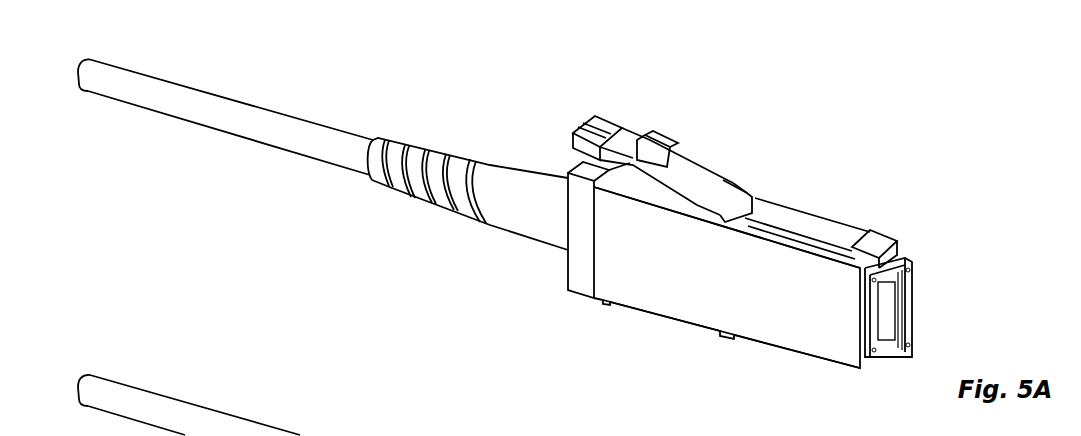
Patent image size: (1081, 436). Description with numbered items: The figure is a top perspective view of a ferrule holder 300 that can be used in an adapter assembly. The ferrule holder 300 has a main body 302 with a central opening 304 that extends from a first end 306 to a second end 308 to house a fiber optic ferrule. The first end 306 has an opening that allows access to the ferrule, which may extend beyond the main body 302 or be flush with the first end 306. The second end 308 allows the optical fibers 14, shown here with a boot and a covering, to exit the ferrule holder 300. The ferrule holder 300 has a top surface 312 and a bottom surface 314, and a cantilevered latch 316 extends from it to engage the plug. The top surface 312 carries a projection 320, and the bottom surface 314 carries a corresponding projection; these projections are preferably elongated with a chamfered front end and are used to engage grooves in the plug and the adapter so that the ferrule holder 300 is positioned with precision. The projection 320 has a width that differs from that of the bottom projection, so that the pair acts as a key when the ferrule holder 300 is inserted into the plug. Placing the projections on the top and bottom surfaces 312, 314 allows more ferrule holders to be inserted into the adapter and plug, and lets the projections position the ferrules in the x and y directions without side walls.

The optical fibers 14 is at (228, 135).
The ferrule holder 300 is at (812, 157).
The main body 302 is at (643, 295).
The central opening 304 is at (880, 364).
The first end 306 is at (894, 248).
The second end 308 is at (588, 297).
The top surface 312 is at (886, 235).
The bottom surface 314 is at (687, 427).
The cantilevered latch 316 is at (673, 167).
The projection 320 is at (835, 228).